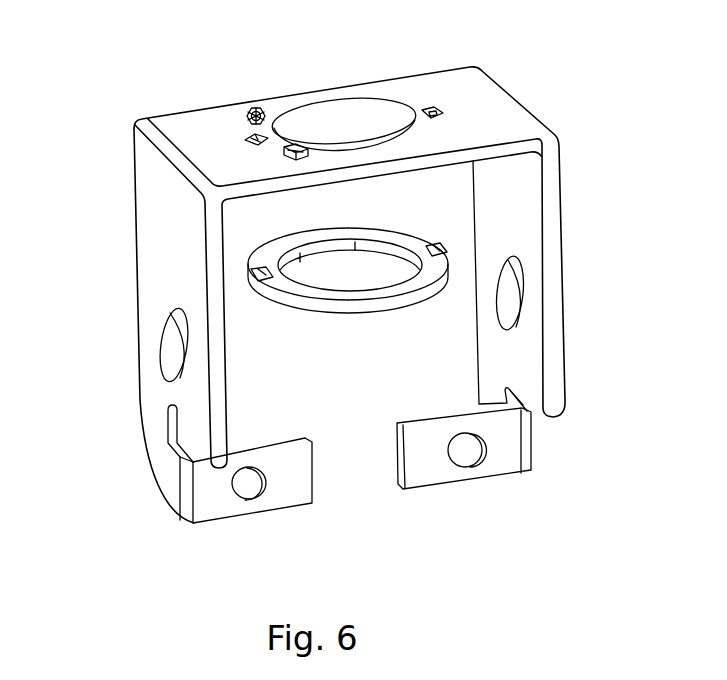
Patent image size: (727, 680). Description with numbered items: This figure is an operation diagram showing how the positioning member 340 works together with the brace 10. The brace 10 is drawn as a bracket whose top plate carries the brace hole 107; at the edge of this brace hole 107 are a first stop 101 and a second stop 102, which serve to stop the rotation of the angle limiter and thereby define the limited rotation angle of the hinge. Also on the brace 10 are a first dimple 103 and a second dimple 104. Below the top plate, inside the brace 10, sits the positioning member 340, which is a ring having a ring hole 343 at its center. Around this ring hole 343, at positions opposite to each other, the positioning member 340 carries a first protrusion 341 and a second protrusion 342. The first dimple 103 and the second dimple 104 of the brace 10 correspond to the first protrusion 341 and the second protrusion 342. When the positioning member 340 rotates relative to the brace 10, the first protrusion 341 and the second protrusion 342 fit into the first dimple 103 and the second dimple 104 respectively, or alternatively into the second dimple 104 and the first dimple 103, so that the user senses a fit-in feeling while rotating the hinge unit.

The brace 10 is at (523, 188).
The first stop 101 is at (257, 105).
The second stop 102 is at (285, 150).
The first dimple 103 is at (246, 137).
The second dimple 104 is at (443, 112).
The brace hole 107 is at (347, 133).
The positioning member 340 is at (348, 310).
The first protrusion 341 is at (258, 281).
The second protrusion 342 is at (433, 277).
The ring hole 343 is at (320, 273).